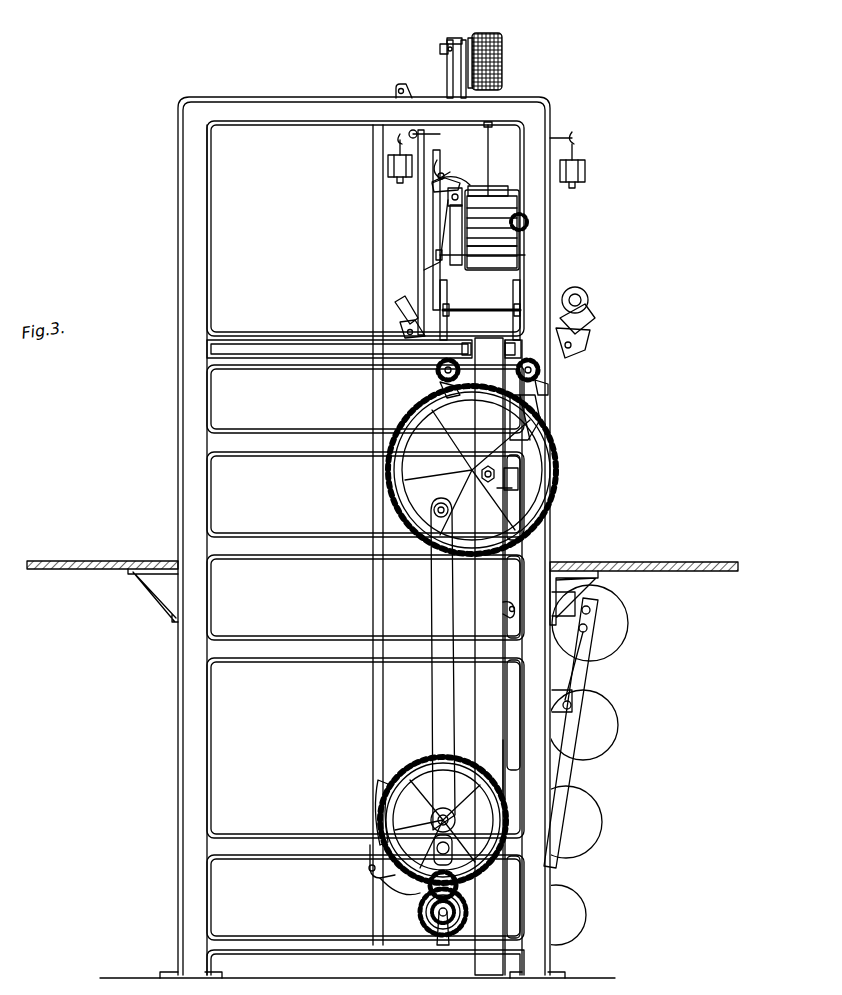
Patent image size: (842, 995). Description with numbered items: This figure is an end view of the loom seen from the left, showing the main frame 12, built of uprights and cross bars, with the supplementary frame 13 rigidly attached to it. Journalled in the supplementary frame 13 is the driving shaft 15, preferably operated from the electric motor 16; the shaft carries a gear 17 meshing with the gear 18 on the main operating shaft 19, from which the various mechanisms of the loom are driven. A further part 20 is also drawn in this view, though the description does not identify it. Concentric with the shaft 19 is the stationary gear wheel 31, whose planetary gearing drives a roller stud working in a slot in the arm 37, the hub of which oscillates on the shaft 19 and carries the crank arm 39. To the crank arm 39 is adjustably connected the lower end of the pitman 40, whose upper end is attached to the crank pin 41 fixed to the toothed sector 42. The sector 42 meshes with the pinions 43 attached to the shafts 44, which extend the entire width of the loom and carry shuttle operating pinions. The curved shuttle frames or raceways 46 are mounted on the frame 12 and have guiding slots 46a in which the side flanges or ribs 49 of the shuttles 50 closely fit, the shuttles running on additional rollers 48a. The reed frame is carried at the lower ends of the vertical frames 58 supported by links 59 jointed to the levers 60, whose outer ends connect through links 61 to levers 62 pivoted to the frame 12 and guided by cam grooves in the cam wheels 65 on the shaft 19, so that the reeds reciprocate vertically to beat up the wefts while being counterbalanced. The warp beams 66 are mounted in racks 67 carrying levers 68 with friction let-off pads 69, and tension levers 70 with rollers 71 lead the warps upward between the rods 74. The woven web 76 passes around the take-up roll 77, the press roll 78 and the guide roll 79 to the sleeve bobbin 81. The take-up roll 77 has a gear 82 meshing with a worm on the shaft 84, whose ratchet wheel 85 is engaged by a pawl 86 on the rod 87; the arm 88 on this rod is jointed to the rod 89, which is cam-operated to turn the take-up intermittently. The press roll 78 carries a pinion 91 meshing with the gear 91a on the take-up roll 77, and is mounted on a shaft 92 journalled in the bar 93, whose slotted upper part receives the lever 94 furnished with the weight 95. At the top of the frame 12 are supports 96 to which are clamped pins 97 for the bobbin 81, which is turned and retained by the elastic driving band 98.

The main frame 12 is at (510, 458).
The supplementary frame 13 is at (492, 576).
The driving shaft 15 is at (440, 940).
The electric motor 16 is at (420, 916).
The gear 17 is at (430, 893).
The gear 18 is at (382, 802).
The main operating shaft 19 is at (455, 818).
The bracket 20 is at (535, 410).
The stationary gear wheel 31 is at (447, 768).
The arm 37 is at (372, 876).
The crank arm 39 is at (365, 866).
The pitman 40 is at (433, 708).
The crank pin 41 is at (434, 512).
The toothed sector 42 is at (393, 480).
The pinion 43 is at (440, 388).
The shaft 44 is at (438, 372).
The shuttle frame 46 is at (400, 328).
The guiding slot 46a is at (395, 302).
The additional roller 48a is at (617, 312).
The side flange 49 is at (580, 292).
The shuttle 50 is at (588, 300).
The vertical frame 58 is at (512, 326).
The link 59 is at (490, 165).
The lever 60 is at (407, 93).
The link 61 is at (372, 238).
The lever 62 is at (383, 898).
The cam wheel 65 is at (378, 790).
The warp beam 66 is at (600, 733).
The rack 67 is at (576, 773).
The lever 68 is at (590, 610).
The friction let-off pad 69 is at (578, 672).
The tension lever 70 is at (503, 730).
The roller 71 is at (503, 603).
The rod 74 is at (515, 494).
The woven web 76 is at (503, 78).
The take-up roll 77 is at (505, 230).
The press roll 78 is at (505, 262).
The guide roll 79 is at (522, 238).
The sleeve bobbin 81 is at (503, 45).
The gear 82 is at (418, 238).
The shaft 84 is at (448, 213).
The ratchet wheel 85 is at (488, 194).
The pawl 86 is at (455, 180).
The rod 87 is at (440, 172).
The arm 88 is at (432, 188).
The rod 89 is at (450, 248).
The pinion 91 is at (526, 254).
The gear 91a is at (524, 214).
The shaft 92 is at (440, 280).
The bar 93 is at (436, 268).
The lever 94 is at (408, 132).
The weight 95 is at (388, 165).
The support 96 is at (447, 74).
The pin 97 is at (440, 48).
The elastic driving band 98 is at (465, 98).